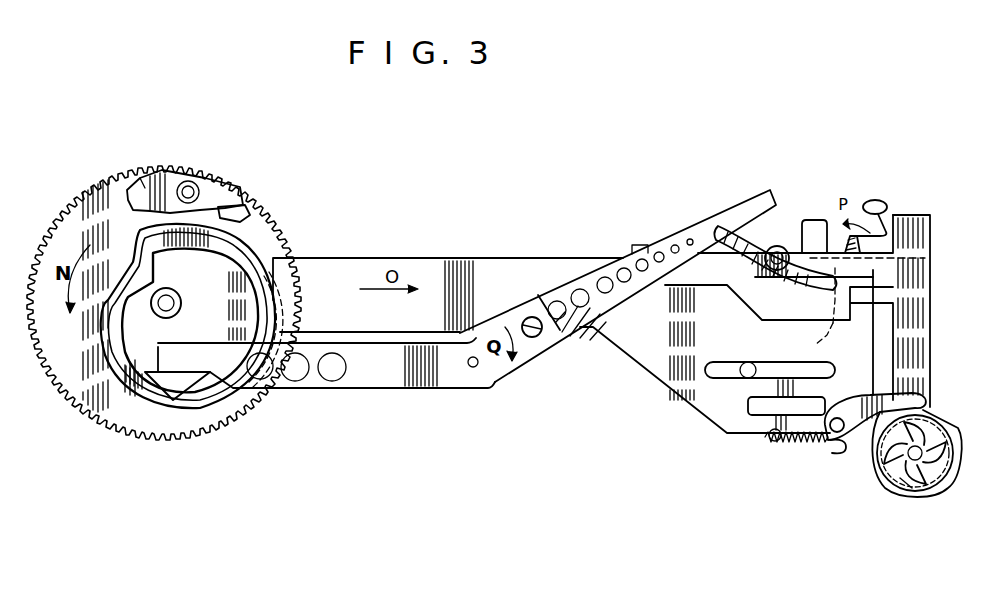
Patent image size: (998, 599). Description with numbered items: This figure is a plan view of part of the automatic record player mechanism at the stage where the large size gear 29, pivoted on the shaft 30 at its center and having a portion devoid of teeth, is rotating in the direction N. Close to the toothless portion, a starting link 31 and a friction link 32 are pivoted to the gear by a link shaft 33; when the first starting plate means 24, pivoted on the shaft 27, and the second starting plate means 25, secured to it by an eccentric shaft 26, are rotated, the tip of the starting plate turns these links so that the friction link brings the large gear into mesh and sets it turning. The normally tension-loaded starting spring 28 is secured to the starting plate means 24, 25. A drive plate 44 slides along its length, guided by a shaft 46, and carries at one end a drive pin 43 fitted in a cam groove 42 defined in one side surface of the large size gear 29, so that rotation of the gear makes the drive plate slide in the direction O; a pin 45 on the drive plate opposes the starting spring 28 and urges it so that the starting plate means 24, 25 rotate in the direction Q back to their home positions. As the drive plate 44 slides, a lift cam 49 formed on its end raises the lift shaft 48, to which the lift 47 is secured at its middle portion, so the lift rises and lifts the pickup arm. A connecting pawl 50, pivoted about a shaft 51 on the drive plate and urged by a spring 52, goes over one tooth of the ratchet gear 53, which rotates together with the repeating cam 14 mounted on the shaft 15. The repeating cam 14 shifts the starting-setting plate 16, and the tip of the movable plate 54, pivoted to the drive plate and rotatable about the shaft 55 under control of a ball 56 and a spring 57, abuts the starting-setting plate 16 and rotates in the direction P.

The repeating cam 14 is at (958, 456).
The shaft 15 is at (921, 458).
The starting-setting plate 16 is at (915, 352).
The first starting plate means 24 is at (386, 380).
The second starting plate means 25 is at (703, 222).
The eccentric shaft 26 is at (532, 338).
The shaft 27 is at (476, 368).
The starting spring 28 is at (595, 327).
The large size gear 29 is at (80, 403).
The shaft 30 is at (170, 304).
The starting link 31 is at (233, 185).
The friction link 32 is at (242, 209).
The link shaft 33 is at (172, 182).
The cam groove 42 is at (217, 403).
The drive pin 43 is at (280, 303).
The drive plate 44 is at (364, 262).
The pin 45 is at (562, 298).
The shaft 46 is at (750, 366).
The lift 47 is at (734, 207).
The lift shaft 48 is at (775, 247).
The lift cam 49 is at (801, 252).
The connecting pawl 50 is at (867, 443).
The shaft 51 is at (833, 445).
The spring 52 is at (800, 443).
The ratchet gear 53 is at (912, 488).
The movable plate 54 is at (922, 225).
The shaft 55 is at (918, 264).
The ball 56 is at (830, 297).
The spring 57 is at (833, 327).